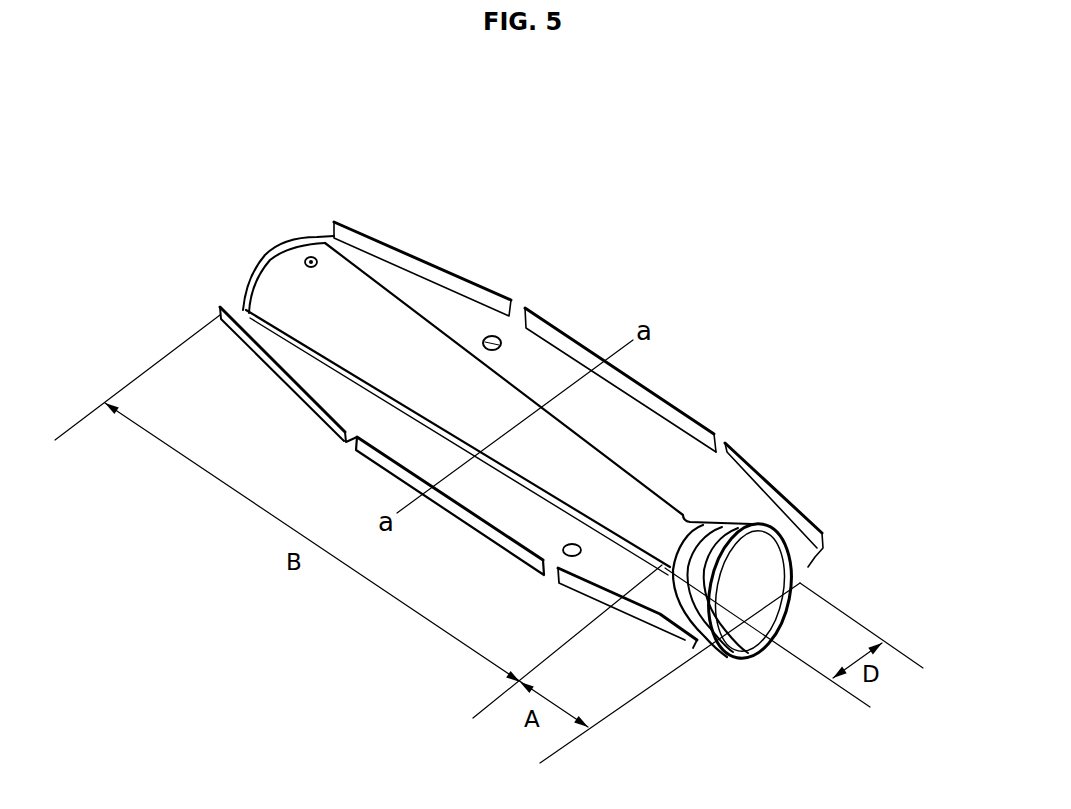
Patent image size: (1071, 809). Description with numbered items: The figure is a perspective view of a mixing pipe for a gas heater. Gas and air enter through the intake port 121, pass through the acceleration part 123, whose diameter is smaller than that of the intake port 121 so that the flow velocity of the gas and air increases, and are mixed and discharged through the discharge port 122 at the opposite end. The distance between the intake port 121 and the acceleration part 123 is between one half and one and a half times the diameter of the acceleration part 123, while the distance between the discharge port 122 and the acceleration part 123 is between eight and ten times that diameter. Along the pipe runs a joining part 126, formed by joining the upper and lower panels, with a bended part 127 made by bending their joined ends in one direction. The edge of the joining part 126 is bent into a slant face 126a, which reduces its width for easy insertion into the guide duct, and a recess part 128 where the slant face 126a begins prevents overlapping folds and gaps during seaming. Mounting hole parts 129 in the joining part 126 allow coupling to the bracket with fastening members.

The intake port 121 is at (800, 583).
The discharge port 122 is at (259, 252).
The acceleration part 123 is at (690, 517).
The joining part 126 is at (695, 468).
The slant face 126a is at (656, 624).
The bended part 127 is at (637, 390).
The recess part 128 is at (499, 339).
The mounting hole parts 129 is at (548, 341).